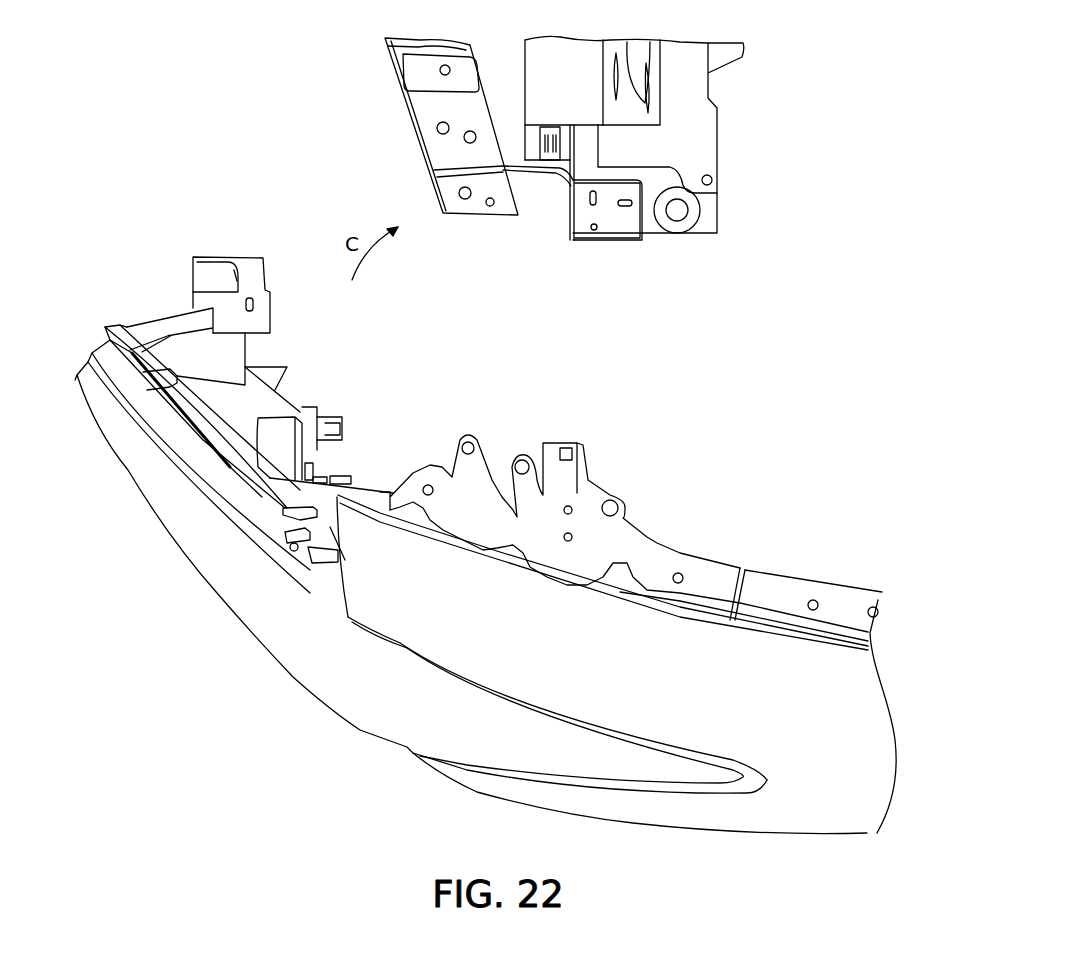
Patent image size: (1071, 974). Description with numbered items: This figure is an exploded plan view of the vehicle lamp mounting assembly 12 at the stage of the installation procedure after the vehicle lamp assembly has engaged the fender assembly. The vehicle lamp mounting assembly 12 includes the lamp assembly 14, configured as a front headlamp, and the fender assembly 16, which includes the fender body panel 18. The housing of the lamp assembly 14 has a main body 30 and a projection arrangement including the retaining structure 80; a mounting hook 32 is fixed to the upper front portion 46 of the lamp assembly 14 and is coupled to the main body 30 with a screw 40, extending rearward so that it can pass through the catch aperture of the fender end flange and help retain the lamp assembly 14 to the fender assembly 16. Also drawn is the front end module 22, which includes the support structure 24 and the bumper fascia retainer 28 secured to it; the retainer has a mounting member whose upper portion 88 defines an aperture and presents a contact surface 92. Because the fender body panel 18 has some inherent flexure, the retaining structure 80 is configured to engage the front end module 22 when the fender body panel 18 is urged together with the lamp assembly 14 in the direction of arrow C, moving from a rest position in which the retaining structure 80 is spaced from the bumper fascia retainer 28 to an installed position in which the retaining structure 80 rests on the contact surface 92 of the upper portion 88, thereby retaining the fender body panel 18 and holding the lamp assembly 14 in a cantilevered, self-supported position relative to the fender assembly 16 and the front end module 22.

The vehicle lamp mounting assembly 12 is at (345, 747).
The lamp assembly 14 is at (215, 550).
The fender assembly 16 is at (417, 580).
The fender body panel 18 is at (740, 663).
The front end module 22 is at (718, 165).
The support structure 24 is at (718, 125).
The bumper fascia retainer 28 is at (415, 148).
The main body 30 is at (122, 368).
The mounting hook 32 is at (337, 527).
The screw 40 is at (294, 547).
The upper front portion 46 is at (333, 580).
The retaining structure 80 is at (272, 318).
The upper portion 88 is at (642, 225).
The contact surface 92 is at (587, 213).